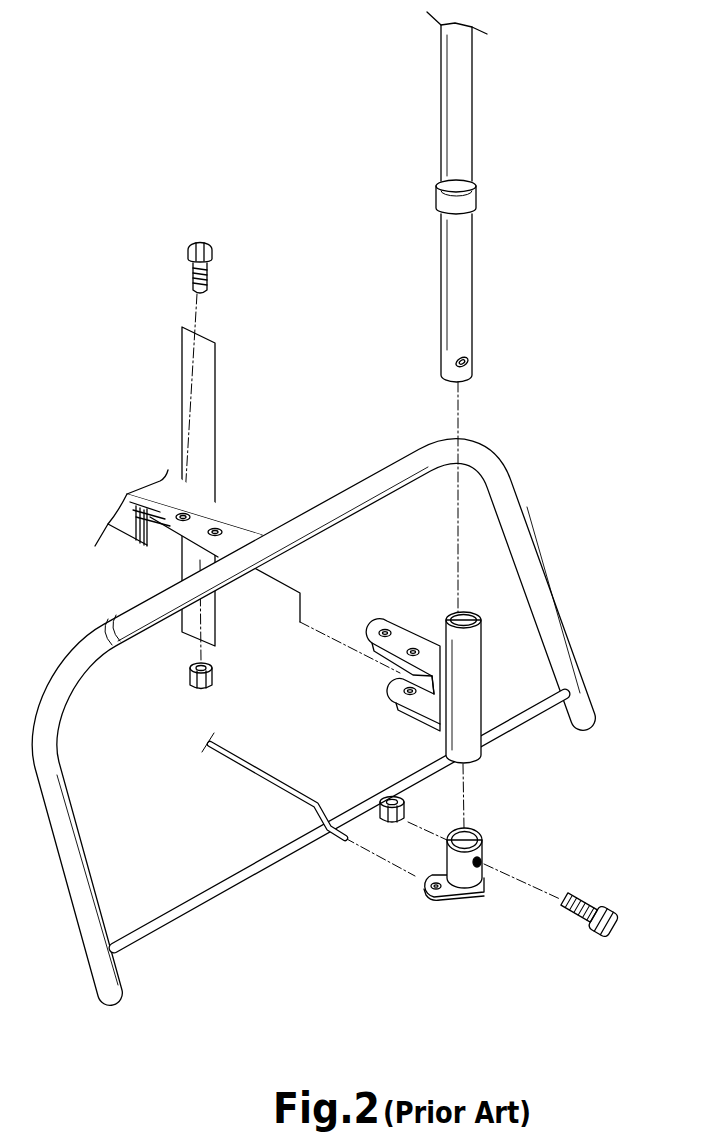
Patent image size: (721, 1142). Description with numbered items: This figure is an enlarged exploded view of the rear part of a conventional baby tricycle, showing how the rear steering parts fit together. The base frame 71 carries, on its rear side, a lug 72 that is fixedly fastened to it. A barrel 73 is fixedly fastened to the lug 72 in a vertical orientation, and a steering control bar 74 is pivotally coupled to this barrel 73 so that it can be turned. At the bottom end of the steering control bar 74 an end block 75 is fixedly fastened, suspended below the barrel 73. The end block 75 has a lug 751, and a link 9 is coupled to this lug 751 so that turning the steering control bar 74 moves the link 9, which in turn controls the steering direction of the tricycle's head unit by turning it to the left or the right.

The link 9 is at (247, 762).
The base frame 71 is at (168, 541).
The lug 72 is at (405, 642).
The barrel 73 is at (468, 723).
The steering control bar 74 is at (457, 113).
The end block 75 is at (484, 837).
The lug 751 is at (452, 880).